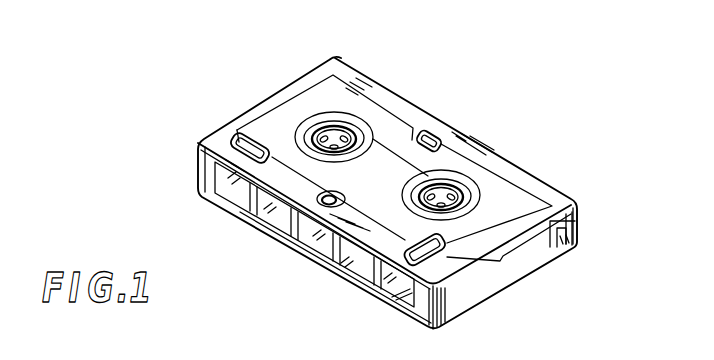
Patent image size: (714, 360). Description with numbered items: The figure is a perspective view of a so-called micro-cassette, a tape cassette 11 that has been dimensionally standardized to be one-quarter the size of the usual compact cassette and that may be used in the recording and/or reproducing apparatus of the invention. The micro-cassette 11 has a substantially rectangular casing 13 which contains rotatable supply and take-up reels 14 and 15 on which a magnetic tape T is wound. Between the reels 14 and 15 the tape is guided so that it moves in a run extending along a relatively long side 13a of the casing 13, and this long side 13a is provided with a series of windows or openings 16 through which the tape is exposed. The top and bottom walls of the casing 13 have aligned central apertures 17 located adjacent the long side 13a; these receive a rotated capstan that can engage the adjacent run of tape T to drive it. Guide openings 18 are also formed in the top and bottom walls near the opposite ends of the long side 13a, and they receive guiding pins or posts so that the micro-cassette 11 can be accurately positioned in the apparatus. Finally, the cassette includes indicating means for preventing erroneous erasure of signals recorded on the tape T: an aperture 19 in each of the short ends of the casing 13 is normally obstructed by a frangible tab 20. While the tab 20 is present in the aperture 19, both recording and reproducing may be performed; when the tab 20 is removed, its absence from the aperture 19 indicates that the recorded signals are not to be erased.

The tape cassette 11 is at (420, 100).
The casing 13 is at (547, 178).
The long side 13a is at (322, 256).
The supply reel 14 is at (330, 125).
The take-up reel 15 is at (447, 193).
The windows or openings 16 is at (248, 194).
The central apertures 17 is at (346, 206).
The guide openings 18 is at (236, 147).
The aperture 19 is at (568, 223).
The frangible tab 20 is at (577, 233).
The magnetic tape T is at (356, 262).